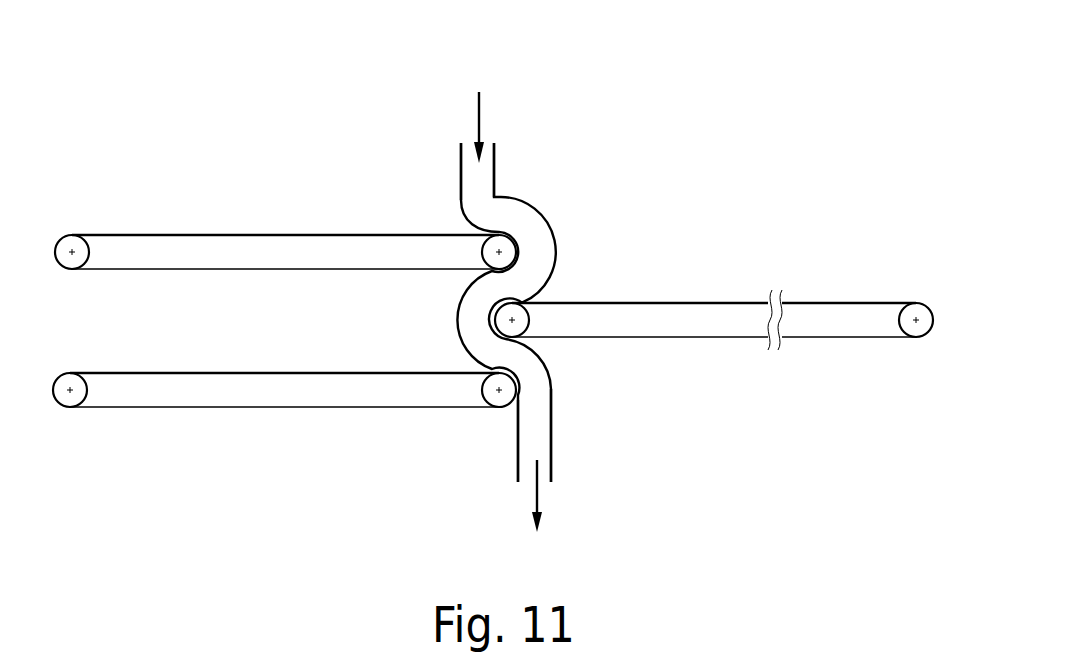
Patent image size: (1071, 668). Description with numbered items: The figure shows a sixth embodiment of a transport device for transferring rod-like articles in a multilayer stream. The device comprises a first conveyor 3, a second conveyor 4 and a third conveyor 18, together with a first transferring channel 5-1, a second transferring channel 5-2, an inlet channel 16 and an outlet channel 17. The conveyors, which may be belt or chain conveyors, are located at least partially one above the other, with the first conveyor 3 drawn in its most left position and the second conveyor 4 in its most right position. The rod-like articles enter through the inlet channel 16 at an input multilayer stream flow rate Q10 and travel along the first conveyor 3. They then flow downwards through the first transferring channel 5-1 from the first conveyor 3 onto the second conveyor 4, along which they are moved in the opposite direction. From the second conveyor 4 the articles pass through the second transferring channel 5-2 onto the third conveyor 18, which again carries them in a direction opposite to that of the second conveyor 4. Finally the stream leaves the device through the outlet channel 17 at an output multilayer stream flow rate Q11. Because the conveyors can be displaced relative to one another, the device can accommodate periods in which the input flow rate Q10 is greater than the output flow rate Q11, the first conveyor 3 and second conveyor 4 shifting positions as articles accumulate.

The first conveyor 3 is at (225, 234).
The second conveyor 4 is at (687, 302).
The first transferring channel 5-1 is at (537, 235).
The second transferring channel 5-2 is at (463, 312).
The inlet channel 16 is at (460, 168).
The outlet channel 17 is at (516, 445).
The third conveyor 18 is at (232, 374).
The input multilayer stream flow rate Q10 is at (480, 103).
The output multilayer stream flow rate Q11 is at (537, 490).